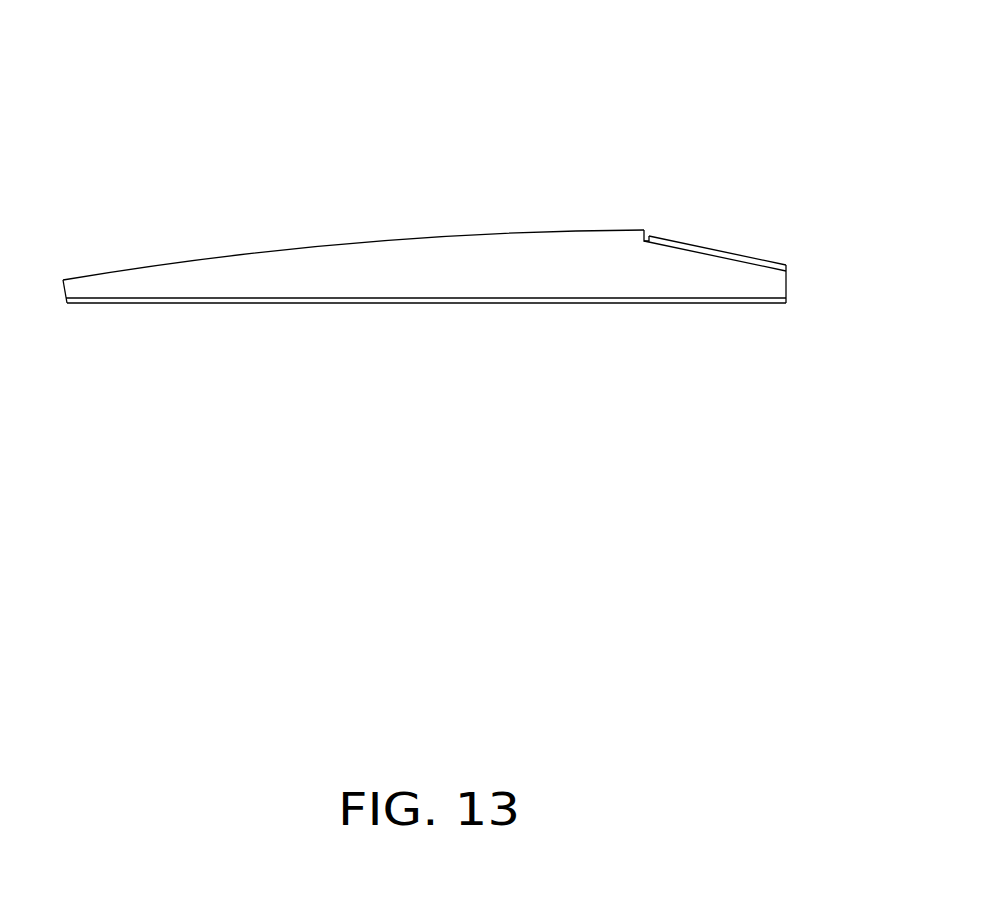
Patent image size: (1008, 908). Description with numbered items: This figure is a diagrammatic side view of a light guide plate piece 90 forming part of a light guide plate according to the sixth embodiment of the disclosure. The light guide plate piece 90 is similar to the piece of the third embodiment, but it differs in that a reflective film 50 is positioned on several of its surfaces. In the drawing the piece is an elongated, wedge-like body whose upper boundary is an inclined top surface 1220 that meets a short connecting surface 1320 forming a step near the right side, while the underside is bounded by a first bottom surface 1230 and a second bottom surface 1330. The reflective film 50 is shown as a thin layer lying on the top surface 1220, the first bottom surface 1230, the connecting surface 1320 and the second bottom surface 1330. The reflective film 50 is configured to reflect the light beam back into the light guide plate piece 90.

The light guide plate piece 90 is at (462, 192).
The connecting surface 1320 is at (642, 241).
The reflective film 50 is at (464, 285).
The top surface 1220 is at (737, 262).
The first bottom surface 1230 is at (737, 301).
The second bottom surface 1330 is at (426, 330).